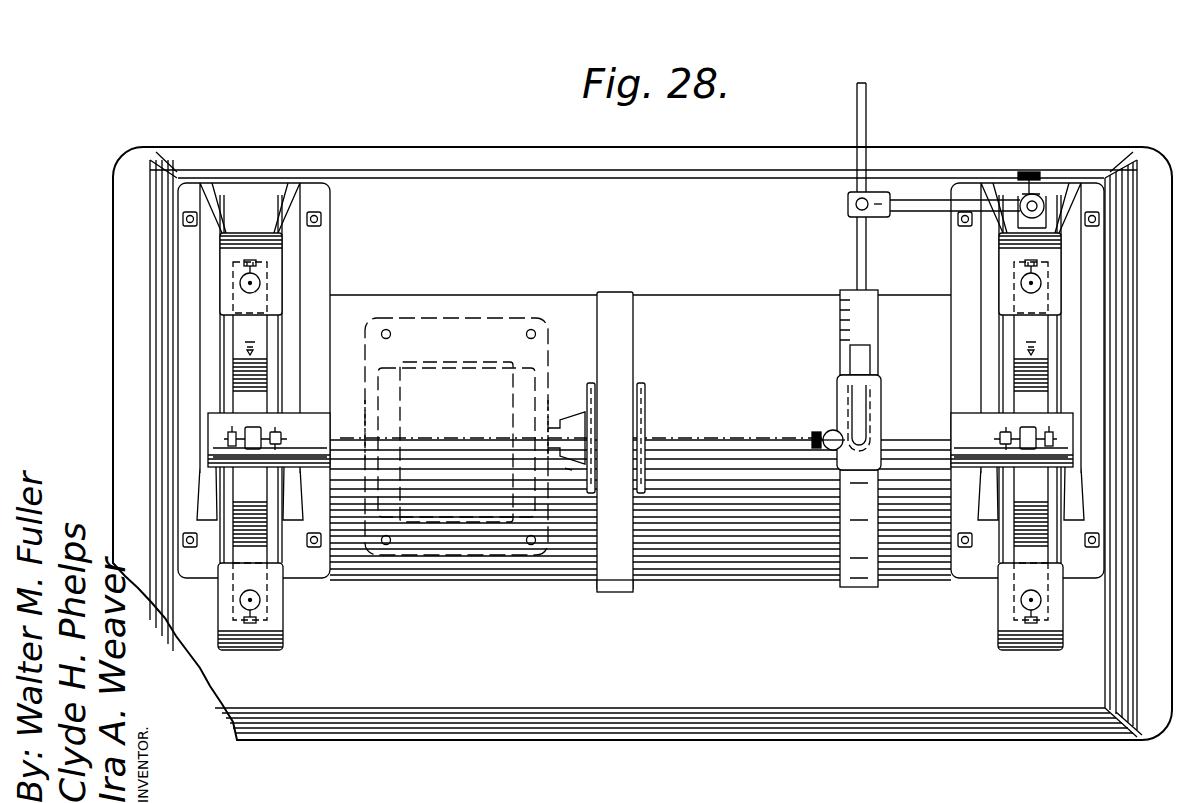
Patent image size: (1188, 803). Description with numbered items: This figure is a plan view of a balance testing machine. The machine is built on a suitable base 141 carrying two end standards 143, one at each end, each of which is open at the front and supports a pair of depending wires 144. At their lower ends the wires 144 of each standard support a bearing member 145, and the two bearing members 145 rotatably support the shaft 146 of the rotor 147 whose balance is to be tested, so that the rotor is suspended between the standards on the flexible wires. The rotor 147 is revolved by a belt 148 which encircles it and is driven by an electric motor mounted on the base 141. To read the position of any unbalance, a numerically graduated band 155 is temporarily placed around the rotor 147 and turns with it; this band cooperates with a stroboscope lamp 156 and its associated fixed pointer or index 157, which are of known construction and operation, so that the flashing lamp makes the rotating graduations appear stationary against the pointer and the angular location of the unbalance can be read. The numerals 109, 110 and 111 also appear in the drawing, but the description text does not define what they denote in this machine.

The base 141 is at (535, 697).
The end standard 143 is at (272, 621).
The depending wire 144 is at (262, 284).
The bearing member 145 is at (243, 353).
The shaft 146 is at (313, 428).
The rotor 147 is at (577, 303).
The belt 148 is at (620, 582).
The motor 109 is at (462, 368).
The adjusting screw 110 is at (640, 434).
The lock screw 111 is at (638, 432).
The numerically graduated band 155 is at (851, 581).
The stroboscope lamp 156 is at (846, 393).
The fixed pointer 157 is at (858, 432).